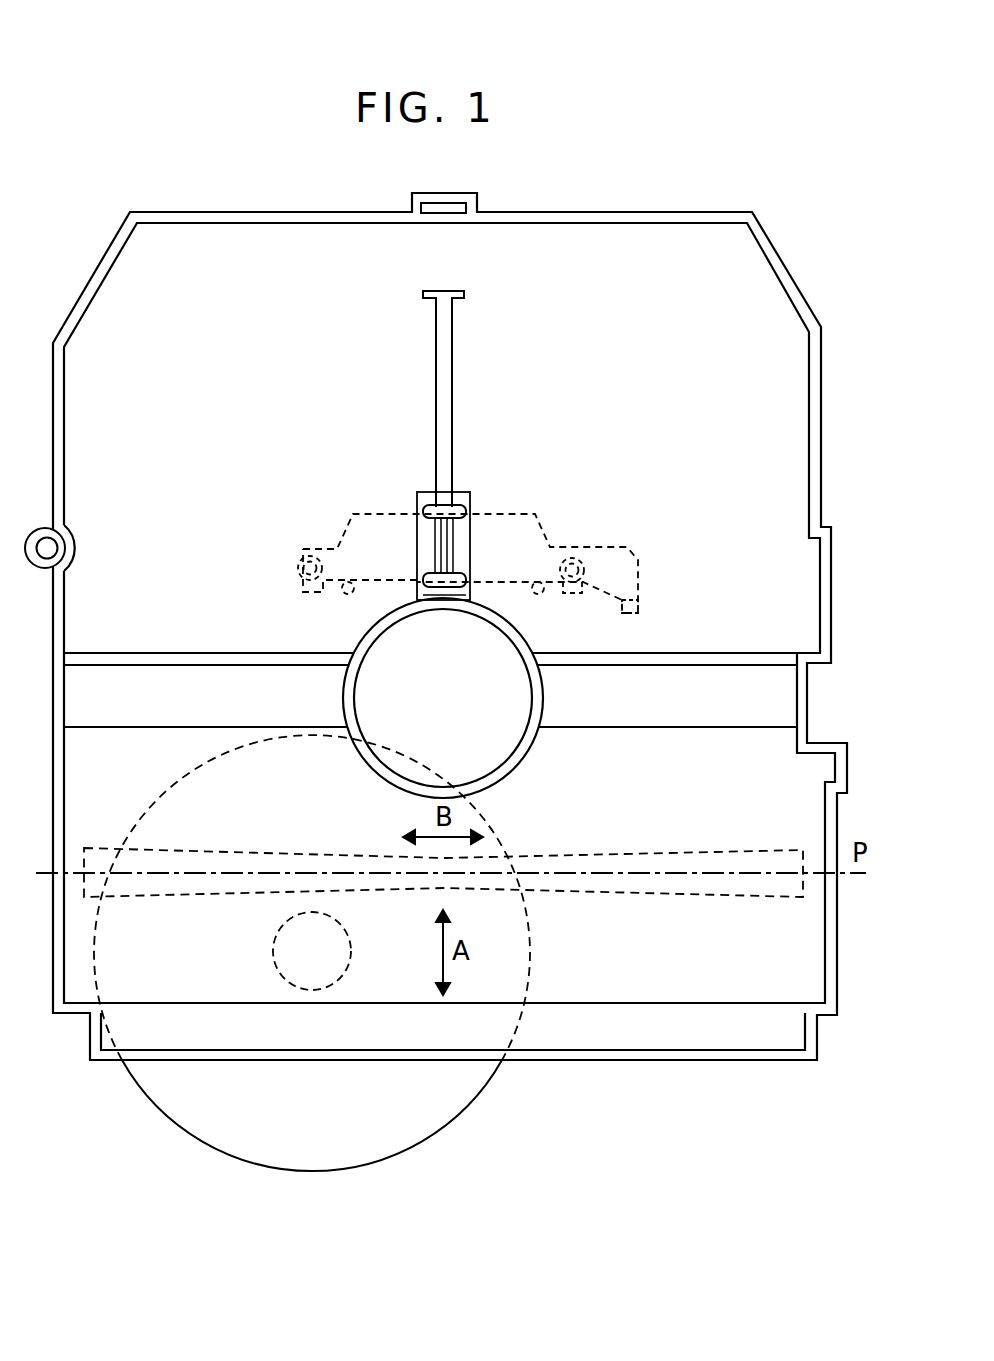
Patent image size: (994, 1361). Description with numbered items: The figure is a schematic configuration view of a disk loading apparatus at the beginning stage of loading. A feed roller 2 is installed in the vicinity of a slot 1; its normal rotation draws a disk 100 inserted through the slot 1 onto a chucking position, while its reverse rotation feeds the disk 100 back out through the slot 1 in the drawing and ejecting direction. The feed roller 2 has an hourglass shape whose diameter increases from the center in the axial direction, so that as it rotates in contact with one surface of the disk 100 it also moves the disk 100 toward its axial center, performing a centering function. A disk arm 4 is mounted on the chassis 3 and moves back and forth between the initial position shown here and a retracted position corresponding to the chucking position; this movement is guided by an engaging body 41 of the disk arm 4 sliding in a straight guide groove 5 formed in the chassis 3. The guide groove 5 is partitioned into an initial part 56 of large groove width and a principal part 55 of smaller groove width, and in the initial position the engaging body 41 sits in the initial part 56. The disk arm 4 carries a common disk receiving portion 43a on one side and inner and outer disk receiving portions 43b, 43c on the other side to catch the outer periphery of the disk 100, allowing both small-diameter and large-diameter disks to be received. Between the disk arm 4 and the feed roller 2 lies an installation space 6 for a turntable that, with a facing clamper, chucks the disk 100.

The slot 1 is at (697, 1035).
The feed roller 2 is at (655, 850).
The chassis 3 is at (821, 412).
The disk arm 4 is at (533, 512).
The guide groove 5 is at (412, 445).
The installation space 6 is at (497, 748).
The engaging body 41 is at (453, 547).
The common disk receiving portion 43a is at (298, 566).
The inner disk receiving portion 43b is at (583, 546).
The outer disk receiving portion 43c is at (640, 616).
The principal part 55 is at (440, 407).
The initial part 56 is at (432, 552).
The disk 100 is at (472, 1105).